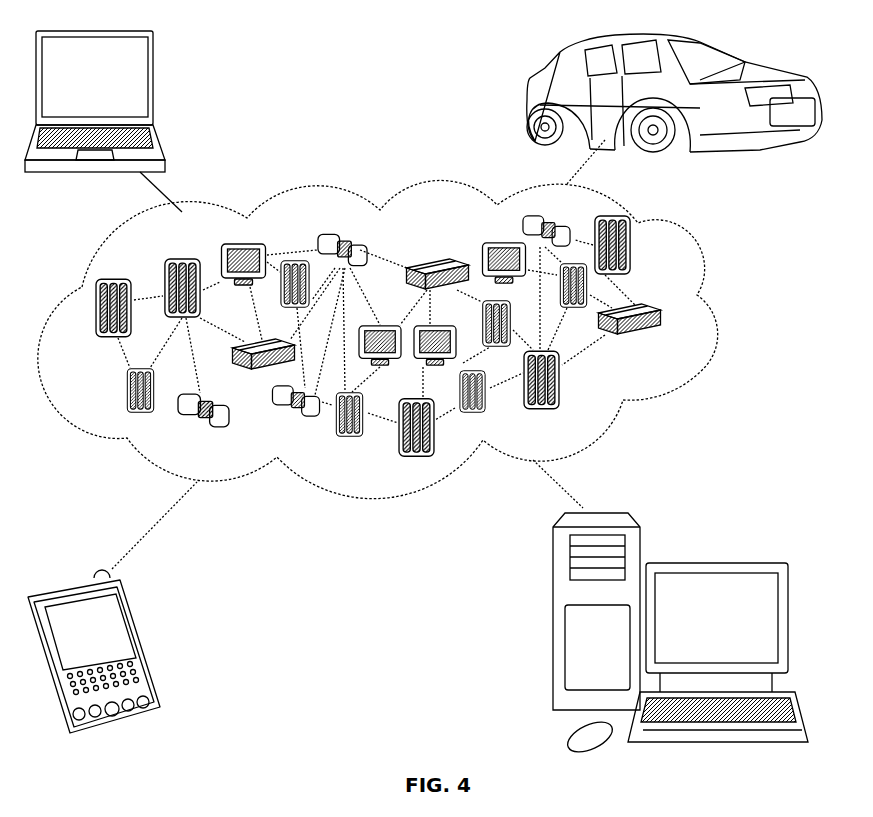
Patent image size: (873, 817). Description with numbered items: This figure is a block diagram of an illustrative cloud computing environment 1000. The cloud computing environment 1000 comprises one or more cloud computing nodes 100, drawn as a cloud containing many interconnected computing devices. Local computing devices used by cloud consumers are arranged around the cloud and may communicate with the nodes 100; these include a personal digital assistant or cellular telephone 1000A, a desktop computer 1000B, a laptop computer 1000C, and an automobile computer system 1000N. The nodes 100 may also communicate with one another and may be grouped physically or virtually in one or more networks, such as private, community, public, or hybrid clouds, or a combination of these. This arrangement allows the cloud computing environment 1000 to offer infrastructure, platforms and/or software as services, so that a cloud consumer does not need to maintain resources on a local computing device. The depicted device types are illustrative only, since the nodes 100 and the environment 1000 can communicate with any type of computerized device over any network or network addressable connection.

The laptop computer 1000C is at (153, 84).
The automobile computer system 1000N is at (530, 102).
The cloud computing environment 1000 is at (718, 320).
The cloud computing nodes 100 is at (425, 336).
The personal digital assistant or cellular telephone 1000A is at (145, 645).
The desktop computer 1000B is at (725, 545).